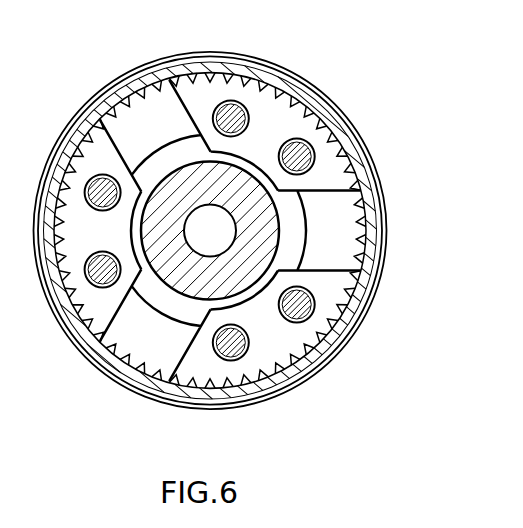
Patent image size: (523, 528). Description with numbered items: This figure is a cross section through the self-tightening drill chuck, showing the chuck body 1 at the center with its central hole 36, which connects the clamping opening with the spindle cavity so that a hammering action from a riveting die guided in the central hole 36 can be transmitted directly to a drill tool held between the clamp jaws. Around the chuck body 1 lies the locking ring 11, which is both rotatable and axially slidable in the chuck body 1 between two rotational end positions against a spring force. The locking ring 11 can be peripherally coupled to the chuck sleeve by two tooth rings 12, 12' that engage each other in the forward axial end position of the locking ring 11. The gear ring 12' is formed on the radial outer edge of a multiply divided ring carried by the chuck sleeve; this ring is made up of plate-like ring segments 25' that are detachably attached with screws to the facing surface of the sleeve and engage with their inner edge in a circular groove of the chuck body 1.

The chuck body 1 is at (221, 178).
The central hole 36 is at (222, 231).
The tooth ring 12 is at (249, 231).
The gear ring 12' is at (253, 230).
The locking ring 11 is at (352, 308).
The ring segments 25' is at (283, 230).